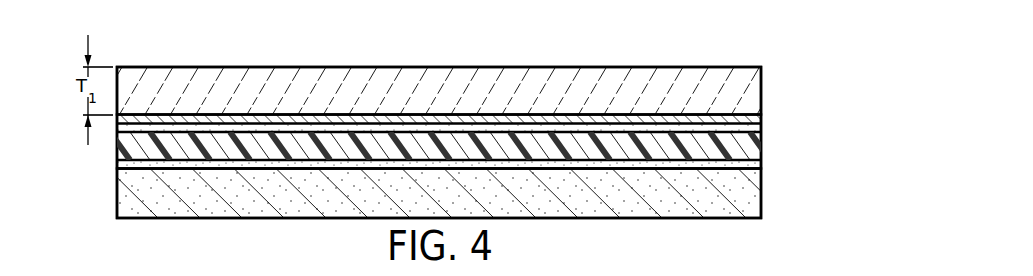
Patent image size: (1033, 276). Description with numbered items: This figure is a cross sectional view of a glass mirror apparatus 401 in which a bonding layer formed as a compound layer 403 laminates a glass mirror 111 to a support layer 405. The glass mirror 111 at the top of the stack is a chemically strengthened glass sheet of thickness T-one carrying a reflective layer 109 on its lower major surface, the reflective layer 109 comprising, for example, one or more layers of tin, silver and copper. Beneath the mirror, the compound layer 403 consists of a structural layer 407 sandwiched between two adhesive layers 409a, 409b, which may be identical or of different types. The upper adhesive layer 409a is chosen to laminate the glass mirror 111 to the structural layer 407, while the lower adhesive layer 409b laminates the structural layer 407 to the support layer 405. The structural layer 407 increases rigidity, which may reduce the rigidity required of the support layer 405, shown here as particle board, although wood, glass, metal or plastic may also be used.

The glass mirror apparatus 401 is at (823, 70).
The glass mirror 111 is at (763, 68).
The compound layer 403 is at (763, 123).
The reflective layer 109 is at (342, 120).
The adhesive layer 409a is at (215, 128).
The structural layer 407 is at (117, 147).
The adhesive layer 409b is at (117, 165).
The support layer 405 is at (762, 192).